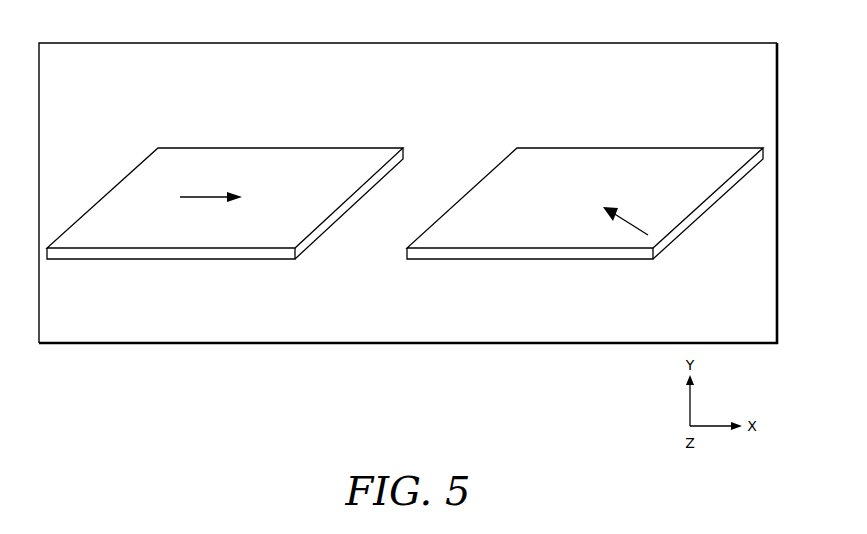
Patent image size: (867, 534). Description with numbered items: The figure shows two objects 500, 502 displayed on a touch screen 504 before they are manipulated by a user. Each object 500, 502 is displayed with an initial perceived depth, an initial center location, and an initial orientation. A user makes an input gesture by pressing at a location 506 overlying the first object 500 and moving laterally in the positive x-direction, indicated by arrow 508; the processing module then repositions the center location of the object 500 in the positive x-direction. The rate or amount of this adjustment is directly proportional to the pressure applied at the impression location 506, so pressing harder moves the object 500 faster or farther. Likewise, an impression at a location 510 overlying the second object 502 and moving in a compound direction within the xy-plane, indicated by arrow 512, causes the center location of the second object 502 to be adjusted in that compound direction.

The object 500 is at (346, 121).
The object 502 is at (705, 123).
The touch screen 504 is at (730, 43).
The location 506 is at (243, 196).
The arrow 508 is at (199, 198).
The location 510 is at (597, 196).
The arrow 512 is at (633, 224).